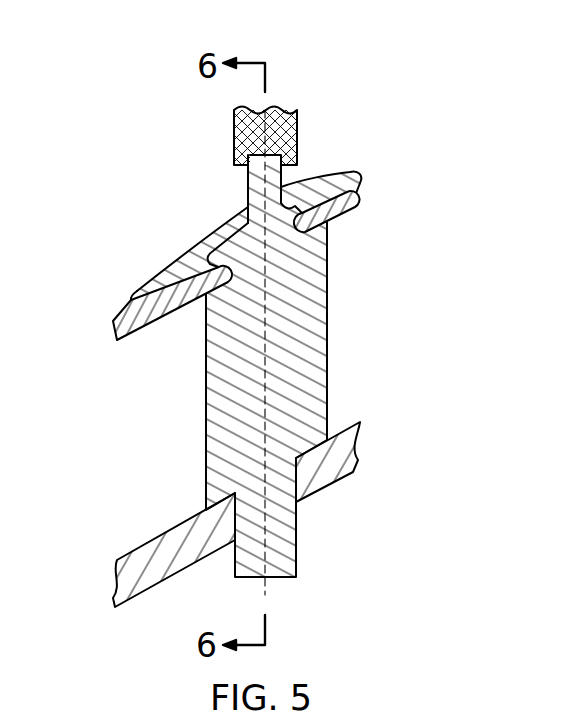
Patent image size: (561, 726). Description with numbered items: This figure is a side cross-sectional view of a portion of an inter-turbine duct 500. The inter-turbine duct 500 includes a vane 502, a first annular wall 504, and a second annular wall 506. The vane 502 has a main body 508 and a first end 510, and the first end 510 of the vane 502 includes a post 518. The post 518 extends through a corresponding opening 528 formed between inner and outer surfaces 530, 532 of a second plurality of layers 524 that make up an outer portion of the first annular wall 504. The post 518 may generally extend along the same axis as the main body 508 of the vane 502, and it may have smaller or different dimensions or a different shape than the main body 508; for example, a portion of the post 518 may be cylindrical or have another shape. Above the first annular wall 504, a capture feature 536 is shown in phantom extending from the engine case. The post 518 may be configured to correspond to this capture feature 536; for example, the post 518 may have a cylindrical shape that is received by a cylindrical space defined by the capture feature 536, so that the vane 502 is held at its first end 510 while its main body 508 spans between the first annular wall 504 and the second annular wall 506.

The inter-turbine duct 500 is at (400, 133).
The vane 502 is at (312, 318).
The first annular wall 504 is at (120, 312).
The second annular wall 506 is at (116, 584).
The main body 508 is at (315, 384).
The first end 510 is at (282, 156).
The post 518 is at (250, 166).
The second plurality of layers 524 is at (130, 300).
The opening 528 is at (247, 207).
The inner surface 530 is at (356, 203).
The outer surface 532 is at (357, 174).
The capture feature 536 is at (289, 125).